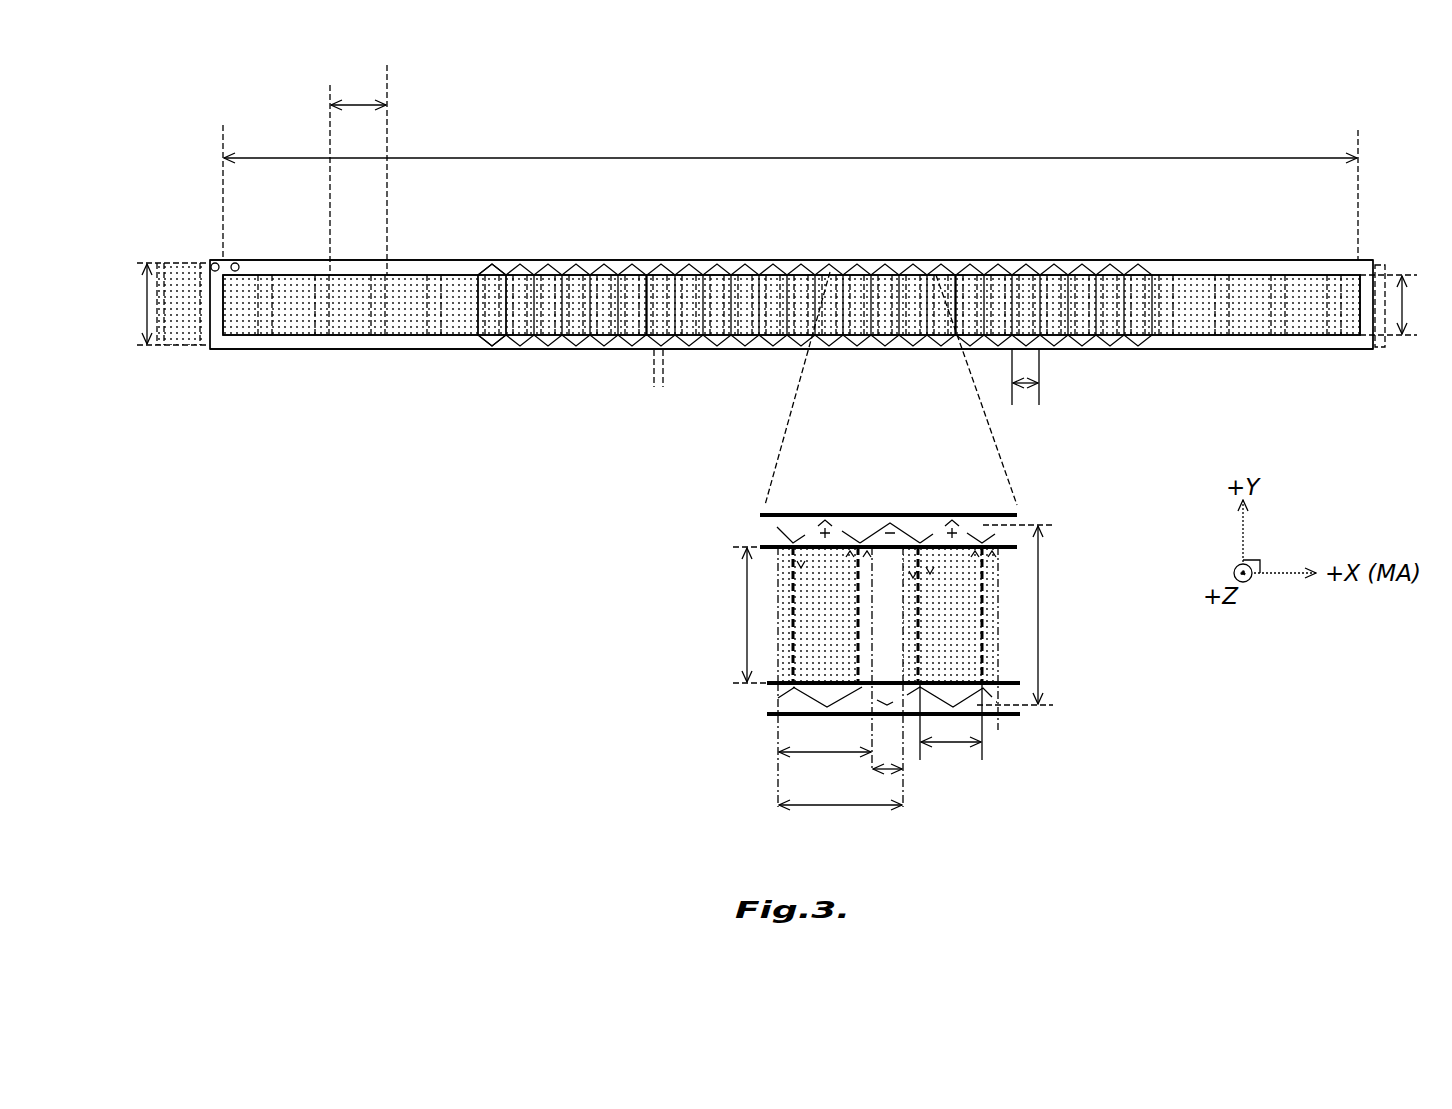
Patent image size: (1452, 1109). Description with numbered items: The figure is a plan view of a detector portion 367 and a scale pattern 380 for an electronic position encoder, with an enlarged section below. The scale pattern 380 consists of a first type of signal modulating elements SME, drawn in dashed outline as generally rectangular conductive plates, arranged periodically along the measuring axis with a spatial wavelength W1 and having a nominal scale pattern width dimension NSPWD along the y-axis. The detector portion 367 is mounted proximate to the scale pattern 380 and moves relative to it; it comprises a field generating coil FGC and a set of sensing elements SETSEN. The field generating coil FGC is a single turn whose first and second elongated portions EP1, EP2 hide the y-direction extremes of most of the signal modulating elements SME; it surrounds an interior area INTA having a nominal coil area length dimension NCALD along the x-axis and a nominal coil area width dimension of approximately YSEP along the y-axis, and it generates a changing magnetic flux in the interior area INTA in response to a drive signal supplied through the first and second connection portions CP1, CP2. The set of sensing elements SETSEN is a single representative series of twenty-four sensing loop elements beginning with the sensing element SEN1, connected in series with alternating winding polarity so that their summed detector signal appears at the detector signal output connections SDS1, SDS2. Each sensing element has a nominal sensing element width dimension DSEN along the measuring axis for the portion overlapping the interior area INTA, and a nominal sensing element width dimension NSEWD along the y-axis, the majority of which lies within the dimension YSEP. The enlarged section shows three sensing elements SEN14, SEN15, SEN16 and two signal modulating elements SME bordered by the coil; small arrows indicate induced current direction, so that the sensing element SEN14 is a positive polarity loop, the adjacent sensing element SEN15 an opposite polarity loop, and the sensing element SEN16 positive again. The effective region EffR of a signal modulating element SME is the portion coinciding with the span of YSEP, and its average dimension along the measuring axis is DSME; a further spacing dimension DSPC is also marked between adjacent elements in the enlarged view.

The detector portion 367 is at (1172, 120).
The scale pattern 380 is at (135, 302).
The signal modulating elements SME is at (185, 337).
The spatial wavelength W1 is at (373, 88).
The nominal coil area length dimension NCALD is at (855, 157).
The nominal scale pattern width dimension NSPWD is at (143, 266).
The first connection portion CP1 is at (236, 263).
The second connection portion CP2 is at (214, 263).
The effective region EffR is at (299, 320).
The set of sensing elements SETSEN is at (1160, 243).
The sensing element SEN1 is at (490, 349).
The detector signal output connection SDS1 is at (654, 388).
The detector signal output connection SDS2 is at (663, 388).
The first elongated portion EP1 is at (1181, 260).
The second elongated portion EP2 is at (1203, 350).
The field generating coil FGC is at (1167, 354).
The interior area INTA is at (1275, 290).
The nominal coil area width dimension YSEP is at (1403, 307).
The nominal sensing element width dimension DSEN is at (1028, 386).
The sensing element SEN14 is at (855, 536).
The sensing element SEN15 is at (866, 545).
The sensing element SEN16 is at (979, 538).
The nominal sensing element width dimension NSEWD is at (1040, 610).
The average dimension of the effective region DSME is at (813, 754).
The spacing dimension DSPC is at (888, 771).